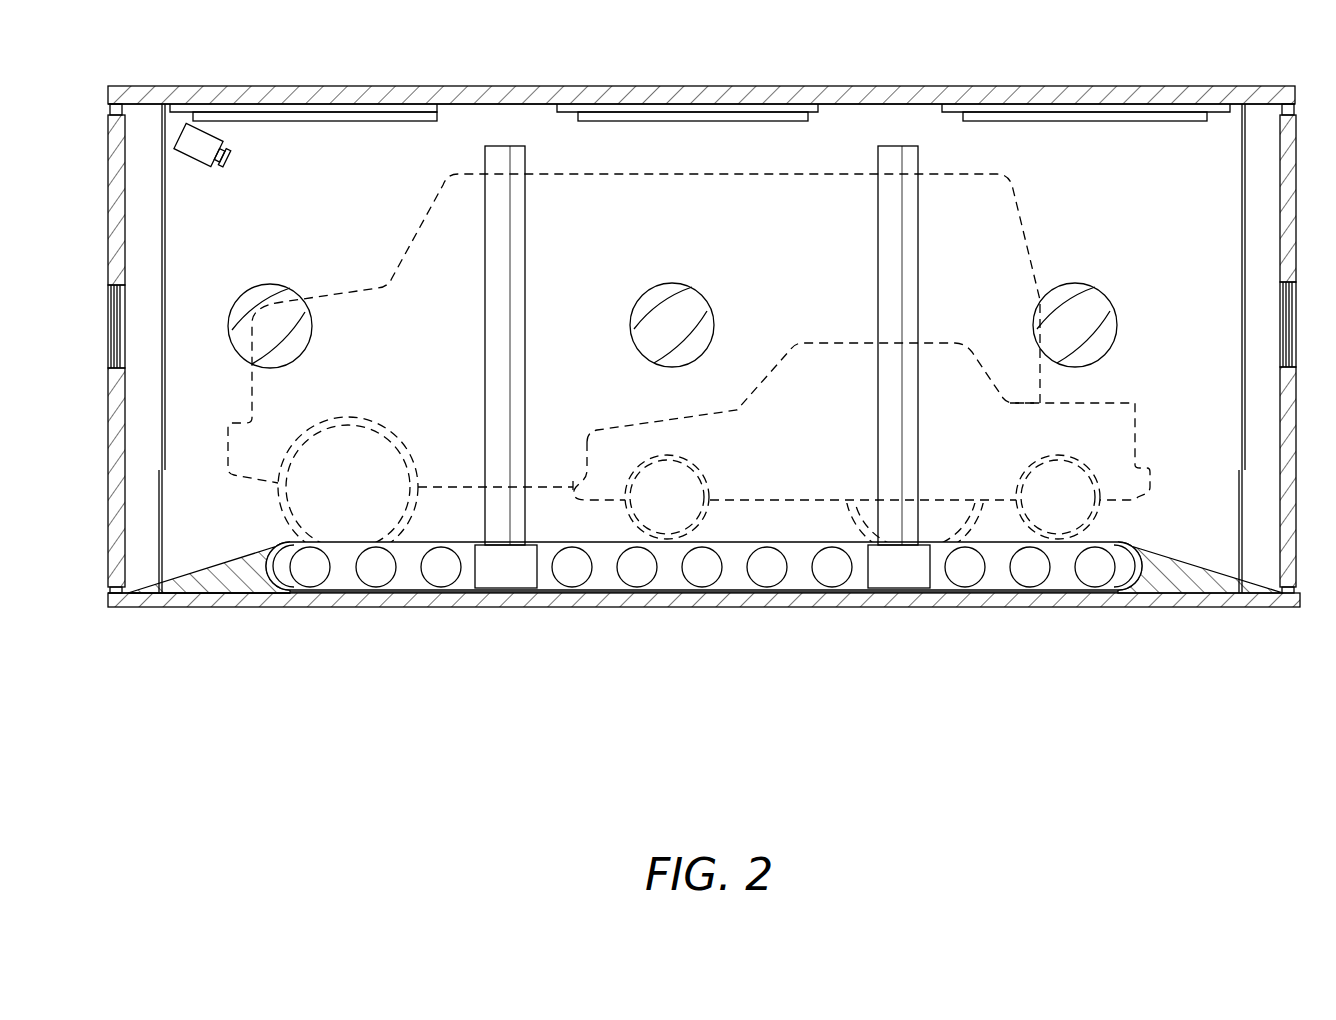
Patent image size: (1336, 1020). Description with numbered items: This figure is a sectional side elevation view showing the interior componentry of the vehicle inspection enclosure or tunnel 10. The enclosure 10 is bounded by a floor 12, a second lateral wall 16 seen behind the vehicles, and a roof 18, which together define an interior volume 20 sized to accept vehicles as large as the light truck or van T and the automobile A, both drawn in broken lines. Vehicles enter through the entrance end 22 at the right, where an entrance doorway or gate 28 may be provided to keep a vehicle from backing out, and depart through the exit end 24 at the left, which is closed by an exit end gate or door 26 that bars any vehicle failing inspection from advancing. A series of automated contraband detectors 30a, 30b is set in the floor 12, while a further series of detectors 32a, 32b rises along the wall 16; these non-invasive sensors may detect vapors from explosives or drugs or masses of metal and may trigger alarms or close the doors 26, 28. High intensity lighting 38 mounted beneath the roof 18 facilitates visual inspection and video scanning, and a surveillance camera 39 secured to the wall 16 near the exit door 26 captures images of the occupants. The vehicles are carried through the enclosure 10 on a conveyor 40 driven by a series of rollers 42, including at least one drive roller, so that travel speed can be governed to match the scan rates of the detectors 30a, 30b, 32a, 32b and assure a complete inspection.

The enclosure 10 is at (386, 718).
The floor 12 is at (705, 585).
The second lateral wall 16 is at (669, 157).
The roof 18 is at (800, 84).
The interior volume 20 is at (487, 122).
The entrance end 22 is at (1295, 607).
The exit end 24 is at (114, 607).
The exit end gate or door 26 is at (122, 207).
The entrance doorway or gate 28 is at (1280, 158).
The detector 30a is at (880, 590).
The detector 30b is at (500, 590).
The detector 32a is at (878, 240).
The detector 32b is at (527, 240).
The high intensity lighting 38 is at (278, 122).
The surveillance camera 39 is at (230, 163).
The conveyor 40 is at (587, 545).
The rollers 42 is at (415, 548).
The truck T is at (423, 213).
The automobile A is at (797, 343).